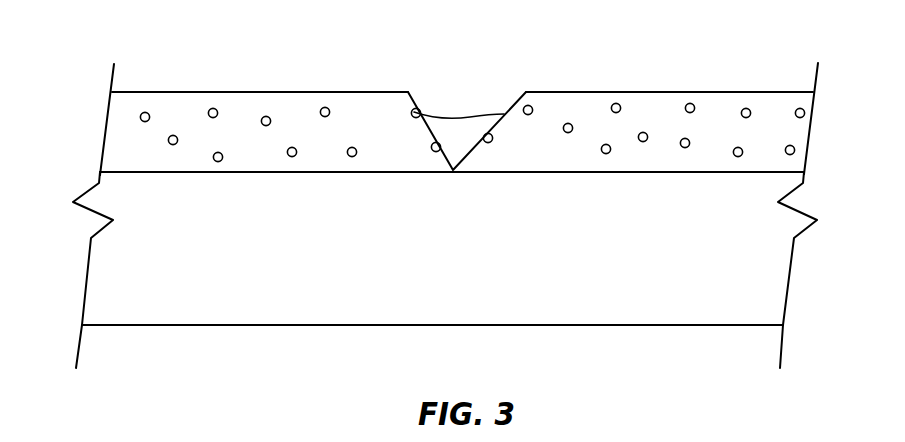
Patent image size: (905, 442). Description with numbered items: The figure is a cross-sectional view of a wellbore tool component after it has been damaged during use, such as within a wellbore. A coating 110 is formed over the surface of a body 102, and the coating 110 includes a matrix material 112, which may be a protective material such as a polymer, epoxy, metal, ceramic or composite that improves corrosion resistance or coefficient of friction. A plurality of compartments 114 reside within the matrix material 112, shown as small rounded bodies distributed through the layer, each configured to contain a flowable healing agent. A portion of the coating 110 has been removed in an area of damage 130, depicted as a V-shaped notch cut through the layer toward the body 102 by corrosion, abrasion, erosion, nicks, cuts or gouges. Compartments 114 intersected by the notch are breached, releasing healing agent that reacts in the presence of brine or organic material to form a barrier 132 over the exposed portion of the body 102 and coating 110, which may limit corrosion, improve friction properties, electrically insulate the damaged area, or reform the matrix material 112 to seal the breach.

The body 102 is at (827, 170).
The coating 110 is at (491, 95).
The matrix material 112 is at (590, 107).
The compartments 114 is at (266, 116).
The area of damage 130 is at (525, 88).
The barrier 132 is at (475, 128).